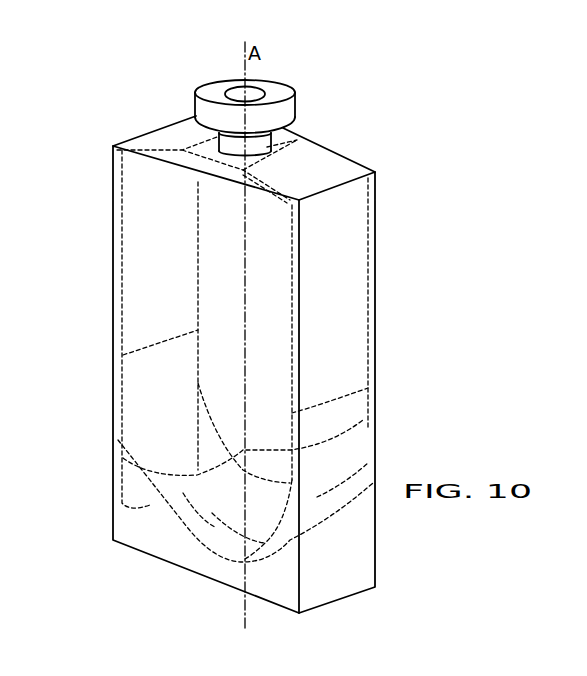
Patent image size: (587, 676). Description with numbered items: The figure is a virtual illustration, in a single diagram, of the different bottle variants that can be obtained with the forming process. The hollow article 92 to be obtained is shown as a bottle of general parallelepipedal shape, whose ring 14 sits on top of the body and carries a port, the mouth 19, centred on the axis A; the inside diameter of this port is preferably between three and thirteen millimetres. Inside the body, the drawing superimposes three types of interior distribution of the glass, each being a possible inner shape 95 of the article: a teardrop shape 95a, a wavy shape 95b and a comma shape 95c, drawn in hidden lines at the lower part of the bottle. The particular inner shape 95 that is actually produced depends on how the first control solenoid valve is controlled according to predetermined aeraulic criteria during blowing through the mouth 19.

The ring 14 is at (211, 93).
The mouth 19 is at (259, 91).
The hollow article 92 is at (352, 149).
The inner shape 95 is at (153, 304).
The teardrop shape 95a is at (183, 493).
The wavy shape 95b is at (212, 513).
The comma shape 95c is at (118, 440).